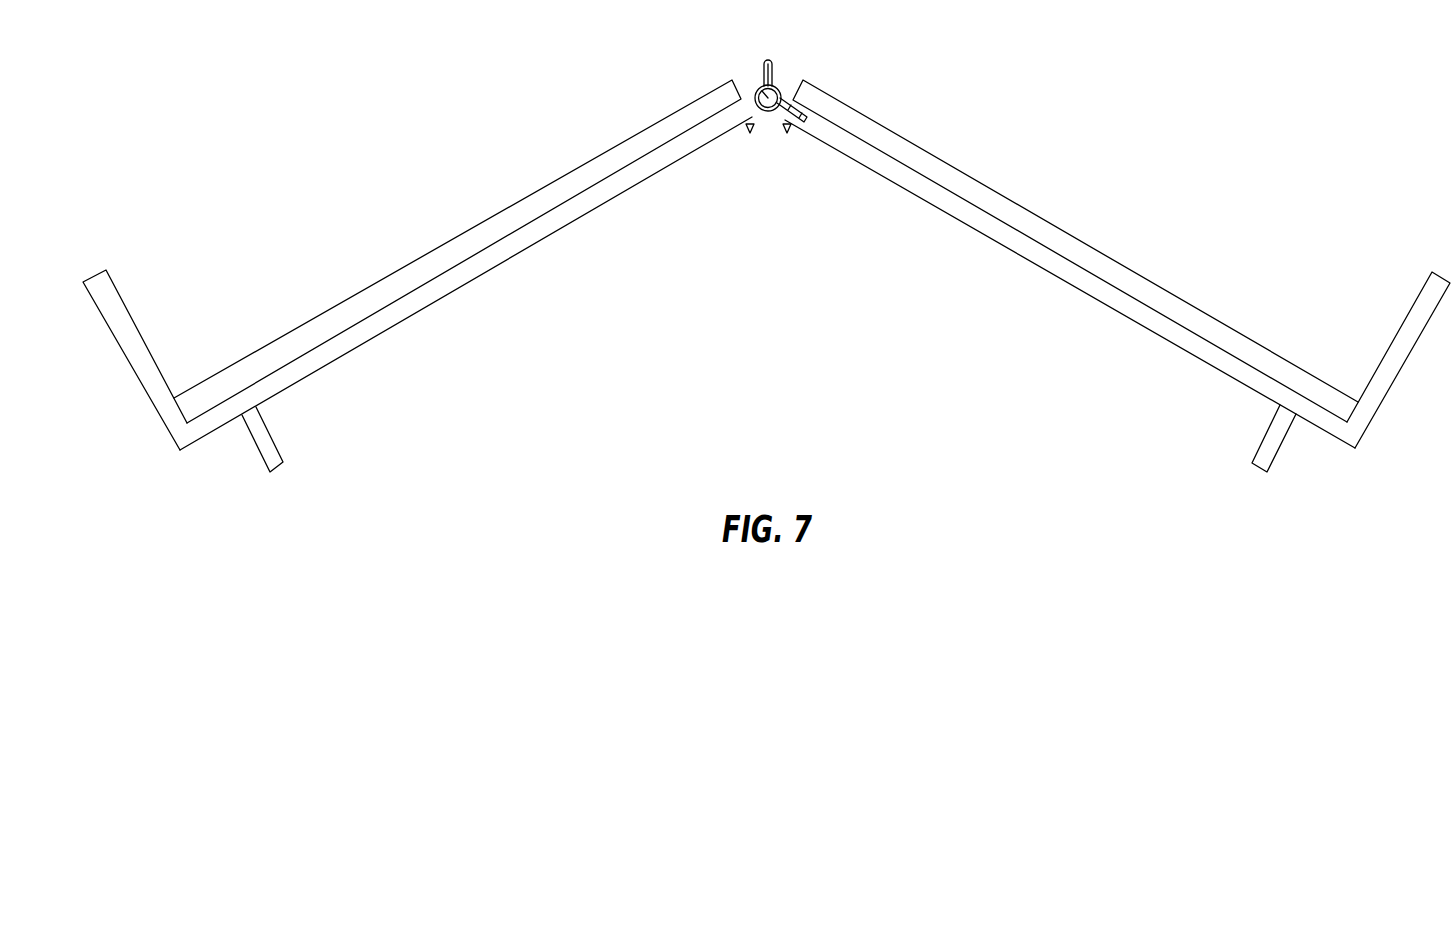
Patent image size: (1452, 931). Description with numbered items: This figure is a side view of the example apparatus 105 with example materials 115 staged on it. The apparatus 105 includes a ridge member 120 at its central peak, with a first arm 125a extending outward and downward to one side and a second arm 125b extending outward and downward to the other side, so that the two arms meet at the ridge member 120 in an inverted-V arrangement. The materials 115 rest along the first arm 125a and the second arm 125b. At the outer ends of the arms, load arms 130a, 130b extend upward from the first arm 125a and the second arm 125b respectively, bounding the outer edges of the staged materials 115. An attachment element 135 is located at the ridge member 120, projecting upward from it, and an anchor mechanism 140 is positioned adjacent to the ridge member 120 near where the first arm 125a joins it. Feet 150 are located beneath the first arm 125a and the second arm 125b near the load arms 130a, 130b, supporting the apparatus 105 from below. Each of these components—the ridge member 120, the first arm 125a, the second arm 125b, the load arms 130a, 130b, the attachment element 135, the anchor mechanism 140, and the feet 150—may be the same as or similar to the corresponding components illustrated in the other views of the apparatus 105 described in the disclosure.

The apparatus 105 is at (766, 262).
The materials 115 is at (766, 265).
The ridge member 120 is at (762, 86).
The first arm 125a is at (1055, 267).
The second arm 125b is at (480, 267).
The load arm 130a is at (1405, 320).
The load arm 130b is at (131, 320).
The attachment element 135 is at (773, 73).
The anchor mechanism 140 is at (797, 132).
The feet 150 is at (260, 438).